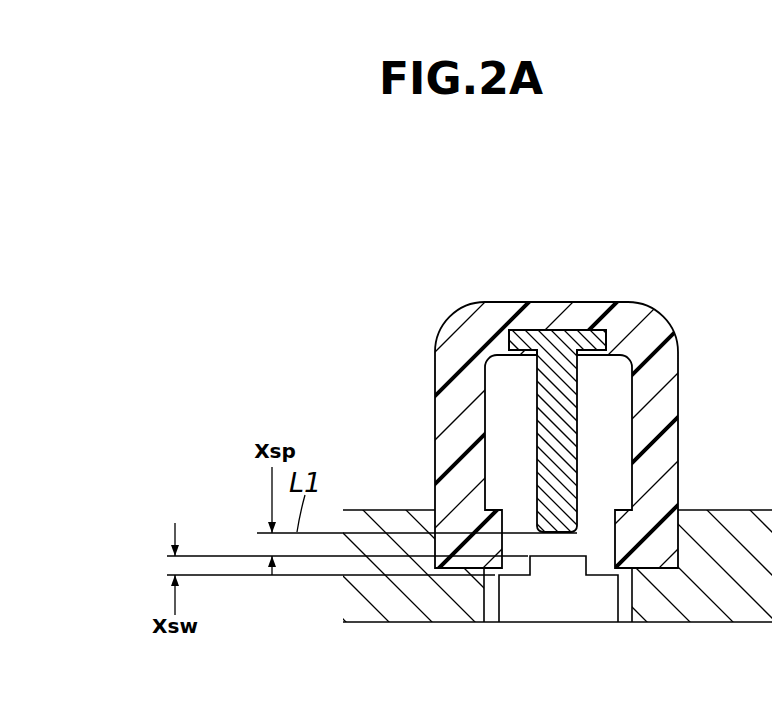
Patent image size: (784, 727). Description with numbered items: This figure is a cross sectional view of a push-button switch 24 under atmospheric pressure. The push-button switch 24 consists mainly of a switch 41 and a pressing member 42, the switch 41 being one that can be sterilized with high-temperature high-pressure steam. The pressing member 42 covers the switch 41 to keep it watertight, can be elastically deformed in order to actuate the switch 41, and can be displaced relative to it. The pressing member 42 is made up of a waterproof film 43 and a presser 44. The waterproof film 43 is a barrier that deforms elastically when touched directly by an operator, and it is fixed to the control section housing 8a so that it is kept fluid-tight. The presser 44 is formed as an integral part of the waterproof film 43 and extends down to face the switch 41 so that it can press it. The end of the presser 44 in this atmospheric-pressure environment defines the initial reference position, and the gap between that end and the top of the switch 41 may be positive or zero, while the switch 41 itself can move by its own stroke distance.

The push-button switch 24 is at (460, 439).
The pressing member 42 is at (460, 420).
The waterproof film 43 is at (473, 322).
The presser 44 is at (443, 242).
The switch 41 is at (570, 602).
The control section housing 8a is at (665, 608).